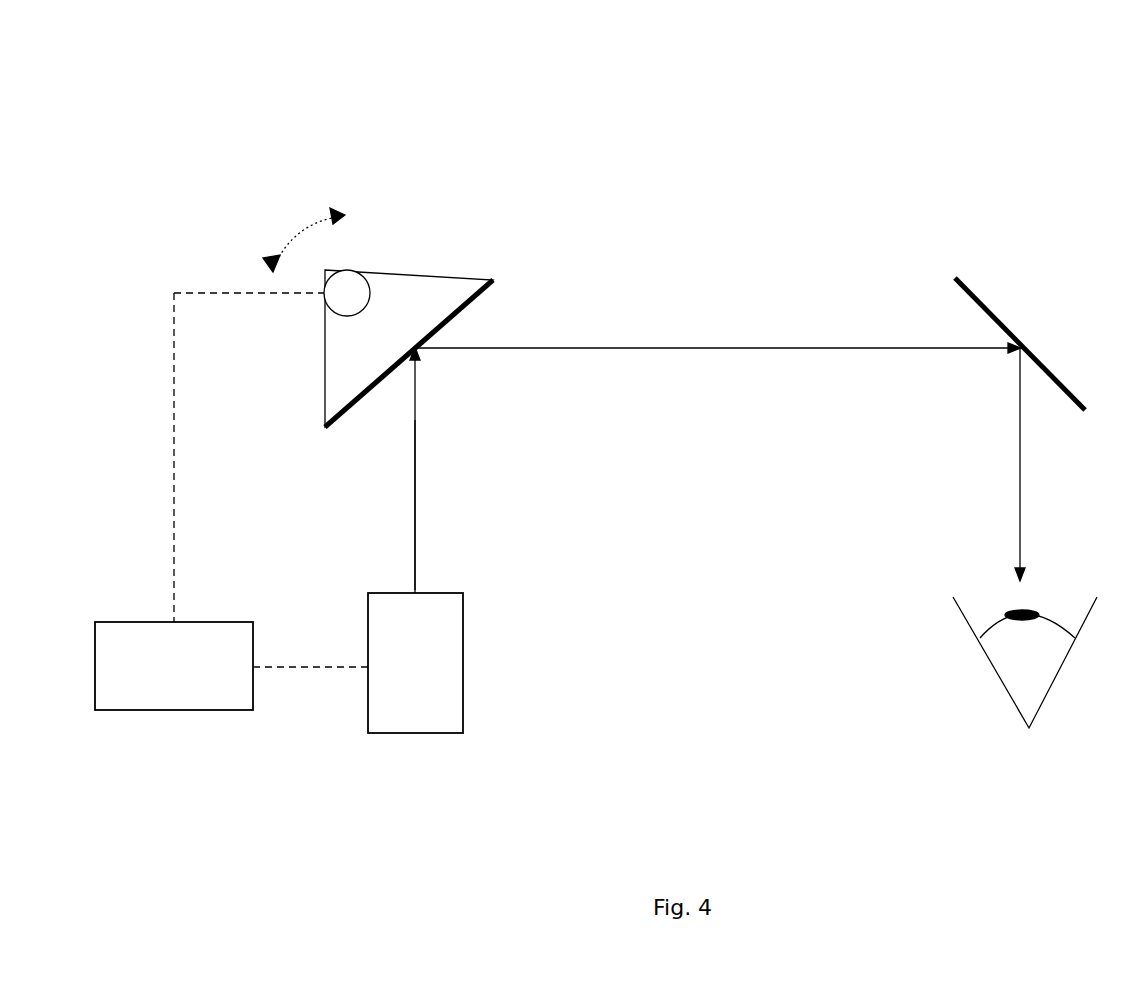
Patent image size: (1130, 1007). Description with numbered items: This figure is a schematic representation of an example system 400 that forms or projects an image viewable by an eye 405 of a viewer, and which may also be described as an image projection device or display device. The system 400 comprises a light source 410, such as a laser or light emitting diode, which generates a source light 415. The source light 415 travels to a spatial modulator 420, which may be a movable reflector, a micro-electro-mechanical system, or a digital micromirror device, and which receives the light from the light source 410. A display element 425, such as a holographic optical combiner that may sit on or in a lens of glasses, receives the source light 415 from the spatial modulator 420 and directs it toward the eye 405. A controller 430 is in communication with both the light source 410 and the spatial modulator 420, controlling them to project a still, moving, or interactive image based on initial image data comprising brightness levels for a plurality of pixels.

The system 400 is at (908, 113).
The eye 405 is at (993, 668).
The light source 410 is at (434, 676).
The source light 415 is at (416, 500).
The spatial modulator 420 is at (430, 276).
The display element 425 is at (985, 303).
The controller 430 is at (195, 676).